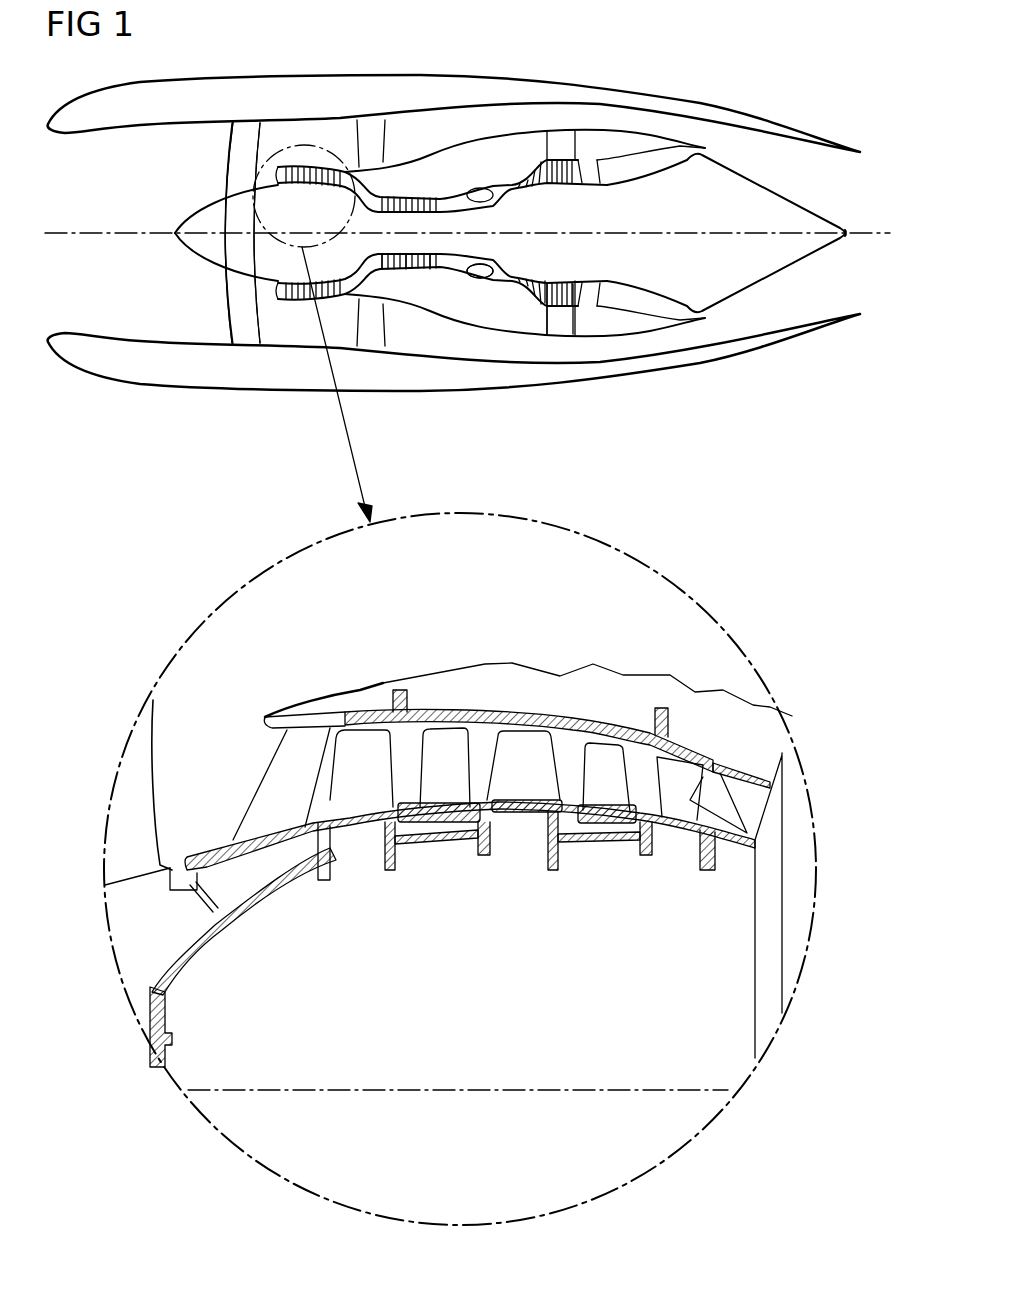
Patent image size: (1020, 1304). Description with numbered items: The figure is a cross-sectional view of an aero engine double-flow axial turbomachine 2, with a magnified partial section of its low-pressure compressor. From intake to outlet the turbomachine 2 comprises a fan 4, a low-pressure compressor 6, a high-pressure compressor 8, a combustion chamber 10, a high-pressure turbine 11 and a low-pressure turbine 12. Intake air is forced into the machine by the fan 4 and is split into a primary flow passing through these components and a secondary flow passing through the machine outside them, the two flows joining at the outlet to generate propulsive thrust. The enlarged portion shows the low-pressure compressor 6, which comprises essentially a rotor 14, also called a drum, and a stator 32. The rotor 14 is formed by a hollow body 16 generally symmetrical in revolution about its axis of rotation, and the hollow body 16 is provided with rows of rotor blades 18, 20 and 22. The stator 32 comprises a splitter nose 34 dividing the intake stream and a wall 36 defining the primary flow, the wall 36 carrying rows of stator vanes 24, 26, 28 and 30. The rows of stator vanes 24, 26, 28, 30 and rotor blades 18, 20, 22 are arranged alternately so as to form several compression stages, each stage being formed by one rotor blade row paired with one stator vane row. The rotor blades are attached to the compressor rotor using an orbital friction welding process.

The turbomachine 2 is at (368, 60).
The fan 4 is at (228, 140).
The low-pressure compressor 6 is at (300, 318).
The high-pressure compressor 8 is at (408, 275).
The combustion chamber 10 is at (456, 266).
The high-pressure turbine 11 is at (513, 288).
The low-pressure turbine 12 is at (568, 282).
The rotor 14 is at (178, 930).
The hollow body 16 is at (247, 898).
The rotor blades 18 is at (355, 800).
The rotor blades 20 is at (520, 790).
The rotor blades 22 is at (673, 800).
The stator vanes 24 is at (273, 775).
The stator vanes 26 is at (437, 790).
The stator vanes 28 is at (610, 748).
The stator vanes 30 is at (735, 780).
The stator 32 is at (540, 660).
The splitter nose 34 is at (348, 700).
The wall 36 is at (482, 735).